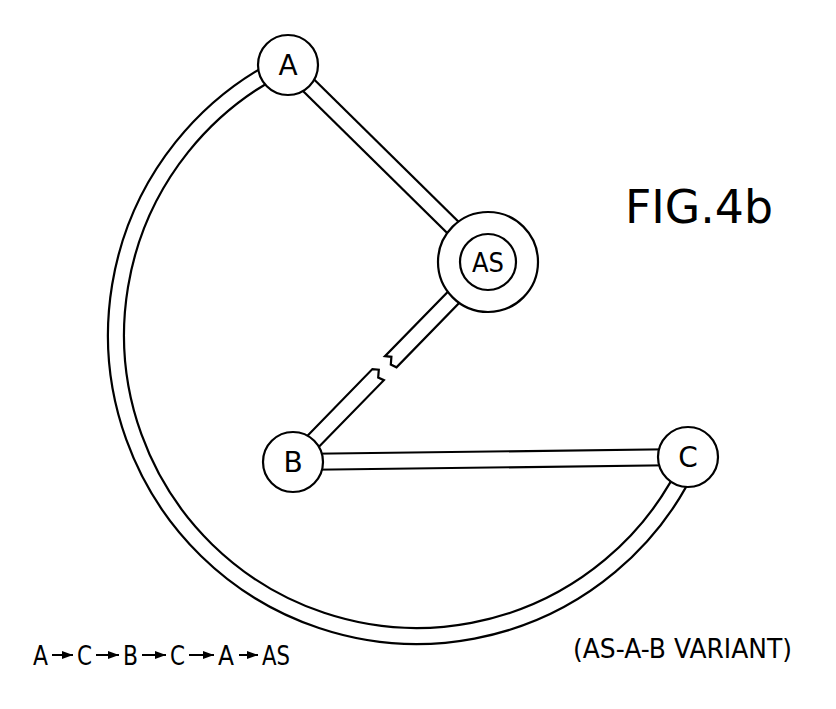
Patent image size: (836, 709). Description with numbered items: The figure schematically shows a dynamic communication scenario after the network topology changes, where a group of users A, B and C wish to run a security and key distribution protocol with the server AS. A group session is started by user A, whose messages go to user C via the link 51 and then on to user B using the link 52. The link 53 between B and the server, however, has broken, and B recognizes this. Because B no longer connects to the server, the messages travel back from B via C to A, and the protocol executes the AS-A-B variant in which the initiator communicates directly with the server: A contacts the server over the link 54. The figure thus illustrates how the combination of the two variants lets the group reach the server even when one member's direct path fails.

The link 51 is at (135, 197).
The link 52 is at (420, 452).
The link 53 is at (372, 362).
The link 54 is at (387, 152).